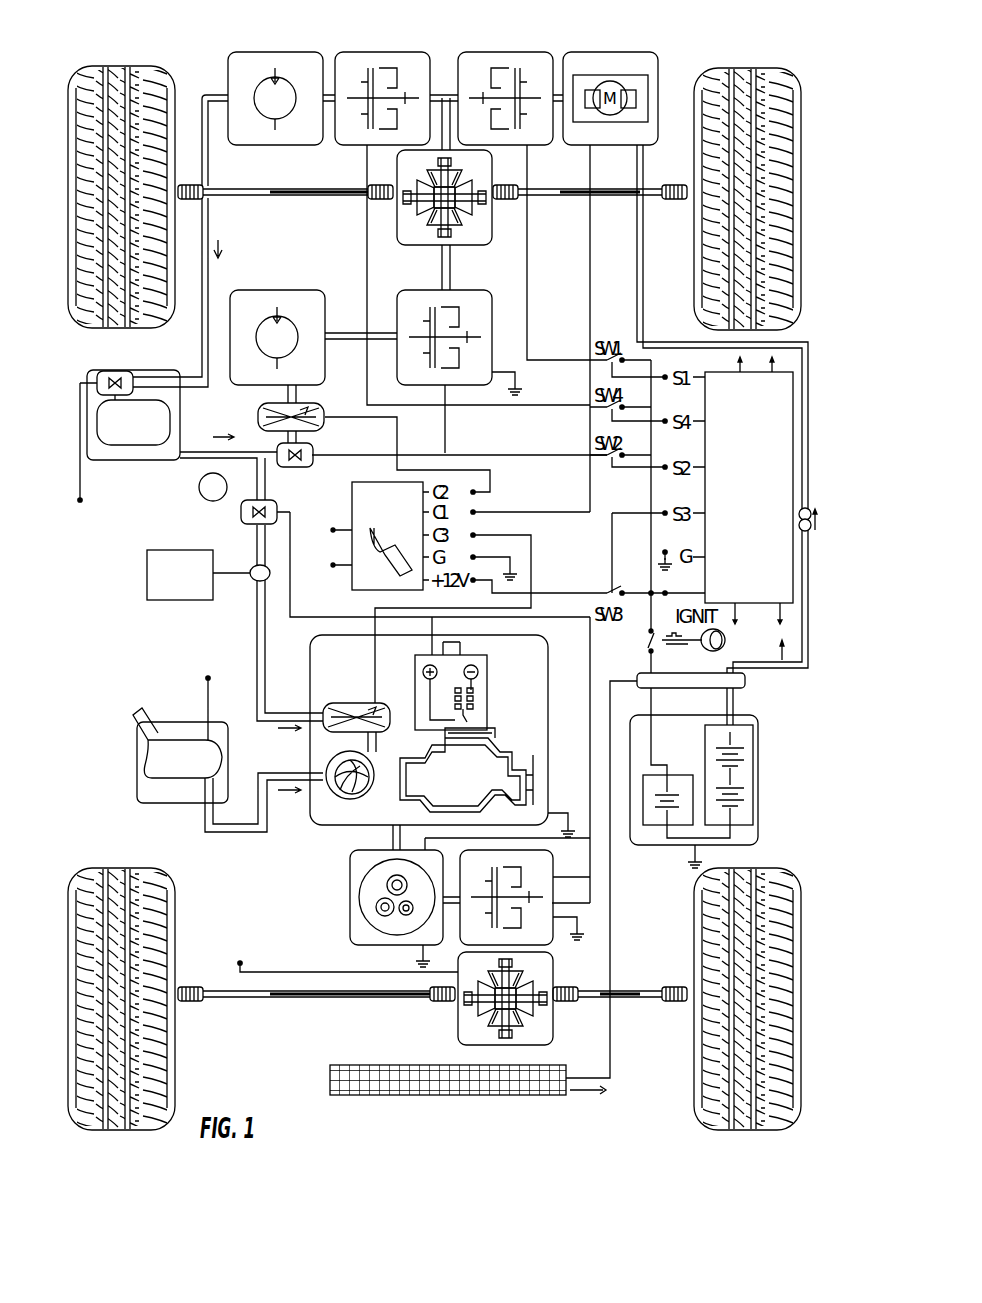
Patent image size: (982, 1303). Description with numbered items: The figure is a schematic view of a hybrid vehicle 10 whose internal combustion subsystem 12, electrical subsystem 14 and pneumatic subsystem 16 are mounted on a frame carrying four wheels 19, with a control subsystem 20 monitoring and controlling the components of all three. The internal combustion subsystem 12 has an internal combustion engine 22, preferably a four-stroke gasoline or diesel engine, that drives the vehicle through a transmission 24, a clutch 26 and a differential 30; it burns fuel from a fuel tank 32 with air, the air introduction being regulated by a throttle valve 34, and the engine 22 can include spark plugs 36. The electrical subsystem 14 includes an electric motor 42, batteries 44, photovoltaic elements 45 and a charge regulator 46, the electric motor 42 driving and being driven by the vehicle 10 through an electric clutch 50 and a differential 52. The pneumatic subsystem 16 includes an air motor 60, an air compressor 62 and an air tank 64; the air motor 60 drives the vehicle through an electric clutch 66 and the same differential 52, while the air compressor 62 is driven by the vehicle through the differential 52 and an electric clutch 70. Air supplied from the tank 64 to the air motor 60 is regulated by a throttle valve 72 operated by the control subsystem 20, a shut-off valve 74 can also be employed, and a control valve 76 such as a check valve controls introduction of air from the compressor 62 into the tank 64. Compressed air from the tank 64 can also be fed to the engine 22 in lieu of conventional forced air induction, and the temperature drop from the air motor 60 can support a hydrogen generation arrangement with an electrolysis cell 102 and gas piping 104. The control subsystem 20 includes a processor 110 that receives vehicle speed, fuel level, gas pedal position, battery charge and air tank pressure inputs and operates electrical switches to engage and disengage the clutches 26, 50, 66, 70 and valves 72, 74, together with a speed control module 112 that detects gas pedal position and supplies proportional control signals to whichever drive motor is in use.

The hybrid vehicle 10 is at (150, 55).
The internal combustion subsystem 12 is at (597, 898).
The electrical subsystem 14 is at (695, 879).
The pneumatic subsystem 16 is at (221, 413).
The wheels 19 is at (750, 70).
The control subsystem 20 is at (784, 650).
The internal combustion engine 22 is at (450, 742).
The transmission 24 is at (352, 862).
The clutch 26 is at (600, 876).
The differential 30 is at (464, 1018).
The fuel tank 32 is at (144, 780).
The throttle valve 34 is at (355, 713).
The spark plugs 36 is at (486, 664).
The electric motor 42 is at (617, 53).
The batteries 44 is at (756, 759).
The photovoltaic elements 45 is at (334, 1078).
The charge regulator 46 is at (746, 684).
The electric clutch 50 is at (487, 53).
The differential 52 is at (420, 247).
The air motor 60 is at (289, 292).
The air compressor 62 is at (252, 53).
The air tank 64 is at (166, 430).
The electric clutch 66 is at (490, 292).
The electric clutch 70 is at (357, 53).
The throttle valve 72 is at (259, 421).
The shut-off valve 74 is at (324, 450).
The control valve 76 is at (115, 369).
The electrolysis cell 102 is at (154, 597).
The gas piping 104 is at (252, 582).
The processor 110 is at (790, 440).
The speed control module 112 is at (350, 582).